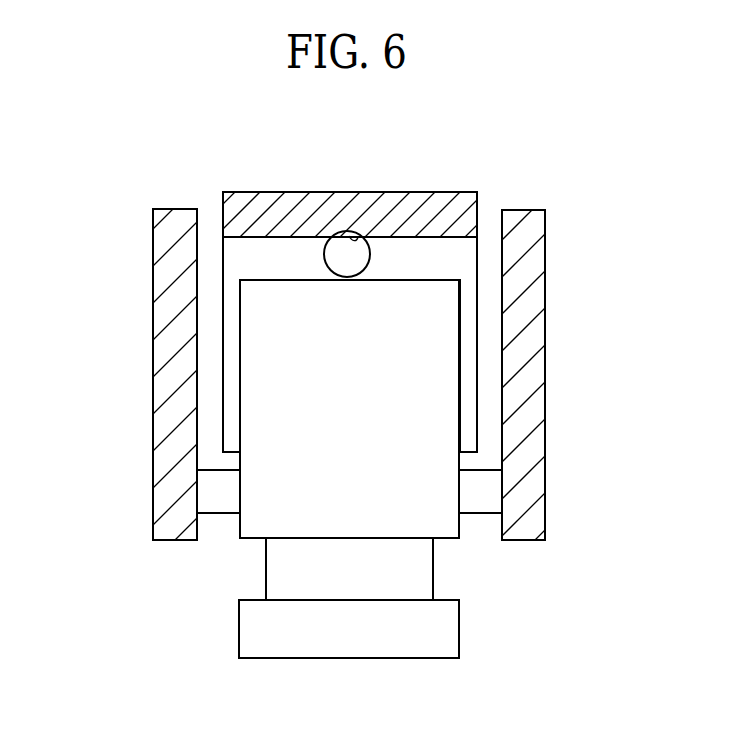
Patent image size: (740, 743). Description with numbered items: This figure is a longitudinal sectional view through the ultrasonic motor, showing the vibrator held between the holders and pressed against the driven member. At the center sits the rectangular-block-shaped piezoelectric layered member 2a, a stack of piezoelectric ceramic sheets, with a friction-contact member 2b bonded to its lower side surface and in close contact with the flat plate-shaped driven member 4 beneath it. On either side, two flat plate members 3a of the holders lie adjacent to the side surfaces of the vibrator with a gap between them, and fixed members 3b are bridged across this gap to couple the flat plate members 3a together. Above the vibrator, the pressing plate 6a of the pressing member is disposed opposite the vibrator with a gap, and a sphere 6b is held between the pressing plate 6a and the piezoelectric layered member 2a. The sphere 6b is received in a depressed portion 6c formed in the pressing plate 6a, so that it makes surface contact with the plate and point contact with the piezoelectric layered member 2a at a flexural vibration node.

The pressing plate 6a is at (421, 192).
The sphere 6b is at (322, 247).
The depressed portion 6c is at (350, 236).
The flat plate member 3a is at (153, 434).
The fixed member 3b is at (480, 517).
The piezoelectric layered member 2a is at (459, 394).
The friction-contact member 2b is at (433, 571).
The driven member 4 is at (459, 627).